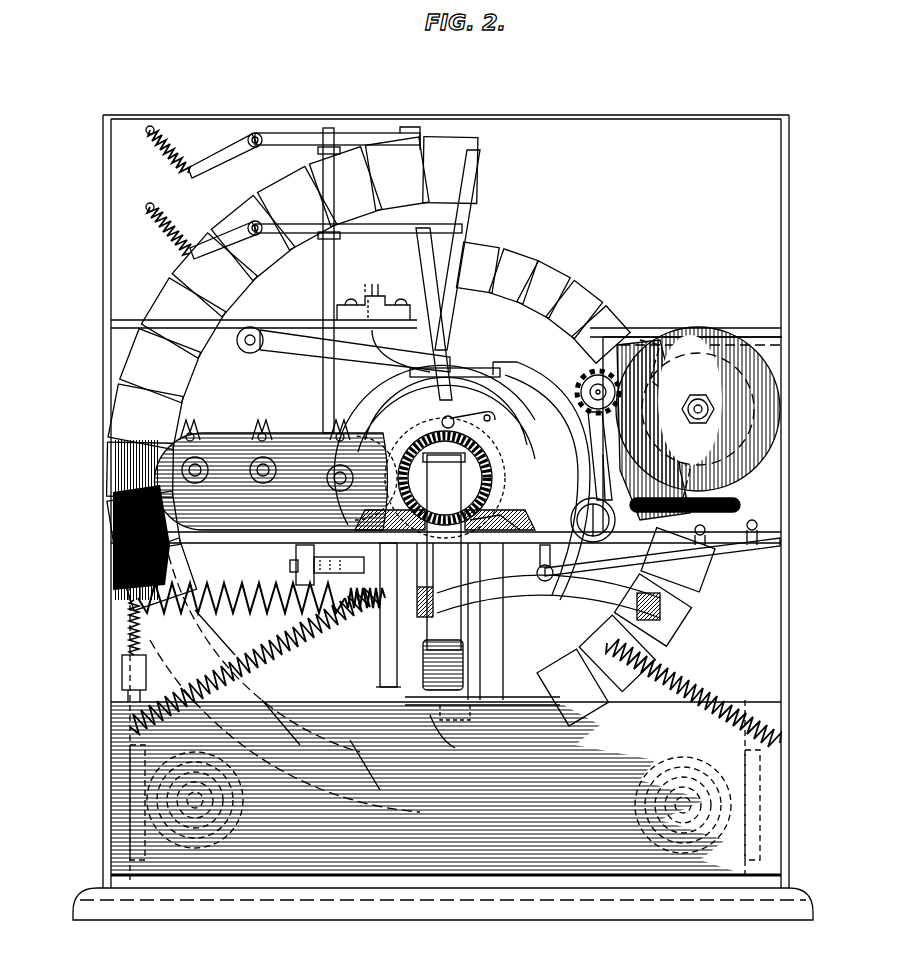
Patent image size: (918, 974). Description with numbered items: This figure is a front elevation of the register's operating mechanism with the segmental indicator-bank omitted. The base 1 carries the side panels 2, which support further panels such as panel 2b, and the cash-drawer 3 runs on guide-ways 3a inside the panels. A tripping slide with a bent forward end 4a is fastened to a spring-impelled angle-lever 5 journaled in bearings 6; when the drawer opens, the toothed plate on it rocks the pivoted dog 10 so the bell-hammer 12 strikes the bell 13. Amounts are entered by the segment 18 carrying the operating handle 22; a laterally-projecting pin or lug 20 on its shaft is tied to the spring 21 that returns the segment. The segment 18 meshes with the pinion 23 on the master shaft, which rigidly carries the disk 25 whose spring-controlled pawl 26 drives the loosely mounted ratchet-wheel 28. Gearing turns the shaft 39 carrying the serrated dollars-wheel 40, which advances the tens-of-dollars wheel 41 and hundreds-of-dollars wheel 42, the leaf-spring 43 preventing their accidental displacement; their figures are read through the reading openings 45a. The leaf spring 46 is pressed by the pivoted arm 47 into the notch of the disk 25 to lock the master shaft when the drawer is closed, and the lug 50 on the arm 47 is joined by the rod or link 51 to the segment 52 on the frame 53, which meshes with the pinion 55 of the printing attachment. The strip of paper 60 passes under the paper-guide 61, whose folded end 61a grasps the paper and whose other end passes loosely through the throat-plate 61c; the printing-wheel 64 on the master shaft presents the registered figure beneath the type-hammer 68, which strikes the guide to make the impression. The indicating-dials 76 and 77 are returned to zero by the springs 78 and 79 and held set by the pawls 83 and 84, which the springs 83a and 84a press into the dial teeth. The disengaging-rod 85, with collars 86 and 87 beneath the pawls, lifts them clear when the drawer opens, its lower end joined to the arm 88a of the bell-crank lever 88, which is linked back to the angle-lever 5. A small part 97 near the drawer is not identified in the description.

The base 1 is at (425, 915).
The side-walls or panels 2 is at (103, 708).
The panel 2b is at (258, 322).
The cash-drawer 3 is at (455, 755).
The guide-ways 3a is at (118, 812).
The forward end of drawer-tripping slide 4a is at (444, 551).
The angle-lever 5 is at (405, 697).
The bearings 6 is at (370, 640).
The pivoted dog 10 is at (122, 680).
The bell-hammer 12 is at (128, 612).
The bell 13 is at (113, 560).
The segment 18 is at (510, 515).
The rod 20 is at (380, 630).
The spring 21 is at (240, 596).
The operating handle 22 is at (445, 498).
The pinion 23 is at (445, 478).
The disk 25 is at (372, 416).
The spring-controlled pawl 26 is at (470, 402).
The ratchet-wheel 28 is at (452, 428).
The shaft 39 is at (271, 481).
The dollars-wheel 40 is at (352, 432).
The tens-of-dollars wheel 41 is at (262, 425).
The hundreds-of-dollars wheel 42 is at (190, 425).
The leaf-spring 43 is at (267, 480).
The reading openings 45a is at (332, 432).
The leaf spring 46 is at (700, 555).
The arm 47 is at (515, 604).
The lug 50 is at (553, 570).
The rod or link 51 is at (593, 498).
The segment 52 is at (639, 425).
The frame 53 is at (505, 375).
The pinion 55 is at (592, 372).
The strip of paper 60 is at (380, 284).
The paper-guide 61 is at (470, 370).
The folded end of paper-guide 61a is at (382, 338).
The throat-plate 61c is at (368, 290).
The printing-wheel 64 is at (405, 400).
The type-hammer 68 is at (360, 360).
The indicating-dial 76 is at (525, 262).
The indicating-dial 77 is at (462, 162).
The returning spring 78 is at (672, 674).
The returning spring 79 is at (300, 648).
The pawl 83 is at (373, 233).
The spring 83a is at (172, 238).
The pawl 84 is at (362, 133).
The spring 84a is at (172, 160).
The disengaging-rod 85 is at (323, 268).
The lug or collar 86 is at (337, 239).
The lug or collar 87 is at (322, 150).
The bell-crank lever 88 is at (296, 575).
The arm of bell-crank lever 88a is at (296, 550).
The link 97 is at (451, 734).